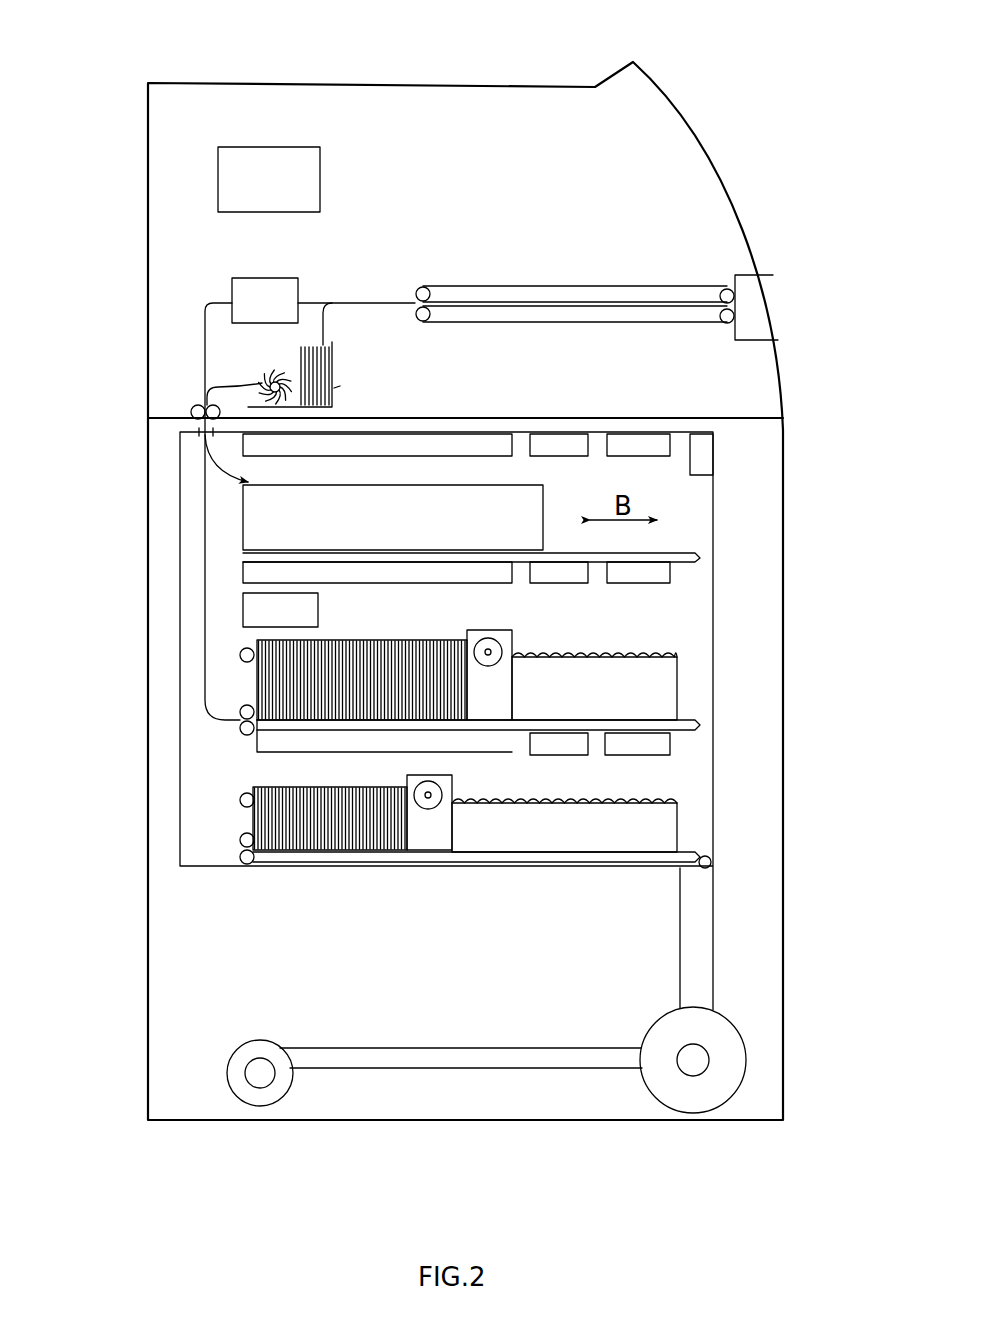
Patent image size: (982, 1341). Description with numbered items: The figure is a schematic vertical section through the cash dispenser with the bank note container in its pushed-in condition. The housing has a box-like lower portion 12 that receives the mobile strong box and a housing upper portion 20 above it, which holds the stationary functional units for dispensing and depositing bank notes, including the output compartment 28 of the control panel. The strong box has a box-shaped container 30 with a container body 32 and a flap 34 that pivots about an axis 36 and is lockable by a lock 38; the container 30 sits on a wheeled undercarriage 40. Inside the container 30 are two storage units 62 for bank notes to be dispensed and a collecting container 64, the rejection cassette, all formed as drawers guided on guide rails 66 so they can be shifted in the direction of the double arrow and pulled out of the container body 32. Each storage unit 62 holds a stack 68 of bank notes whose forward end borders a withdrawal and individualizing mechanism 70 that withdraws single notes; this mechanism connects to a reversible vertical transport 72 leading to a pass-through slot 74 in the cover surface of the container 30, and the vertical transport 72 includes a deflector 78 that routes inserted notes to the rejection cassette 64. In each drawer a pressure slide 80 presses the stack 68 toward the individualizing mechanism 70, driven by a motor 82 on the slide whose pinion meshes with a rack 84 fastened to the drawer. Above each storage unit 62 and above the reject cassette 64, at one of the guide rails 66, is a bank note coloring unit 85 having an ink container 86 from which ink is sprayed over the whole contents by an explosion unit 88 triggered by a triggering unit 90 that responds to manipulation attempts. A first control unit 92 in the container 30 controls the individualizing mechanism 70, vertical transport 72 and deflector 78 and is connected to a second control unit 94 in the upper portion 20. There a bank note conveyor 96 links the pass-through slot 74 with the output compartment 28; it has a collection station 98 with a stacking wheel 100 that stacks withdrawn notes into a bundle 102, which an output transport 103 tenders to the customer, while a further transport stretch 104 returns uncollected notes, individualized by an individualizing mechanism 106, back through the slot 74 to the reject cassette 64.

The housing lower portion 12 is at (148, 945).
The housing upper portion 20 is at (208, 82).
The output compartment 28 is at (760, 300).
The container 30 is at (520, 870).
The container body 32 is at (180, 680).
The flap 34 is at (715, 573).
The axis 36 is at (705, 866).
The lock 38 is at (700, 433).
The undercarriage 40 is at (480, 1086).
The storage unit 62 is at (685, 690).
The collecting container 64 is at (240, 522).
The guide rails 66 is at (695, 553).
The stack of bank notes 68 is at (398, 662).
The withdrawal and individualizing mechanism 70 is at (237, 731).
The vertical transport 72 is at (205, 565).
The pass-through slot 74 is at (197, 420).
The deflector 78 is at (205, 460).
The pressure slide 80 is at (425, 845).
The motor 82 is at (500, 660).
The rack 84 is at (677, 652).
The bank note coloring unit 85 is at (470, 462).
The ink container 86 is at (485, 434).
The explosion unit 88 is at (562, 434).
The triggering unit 90 is at (638, 434).
The first control unit 92 is at (250, 612).
The second control unit 94 is at (320, 178).
The bank note conveyor 96 is at (385, 298).
The collection station 98 is at (342, 385).
The stacking wheel 100 is at (262, 378).
The bundle 102 is at (335, 366).
The output transport 103 is at (560, 283).
The further transport stretch 104 is at (318, 300).
The individualizing mechanism 106 is at (247, 287).